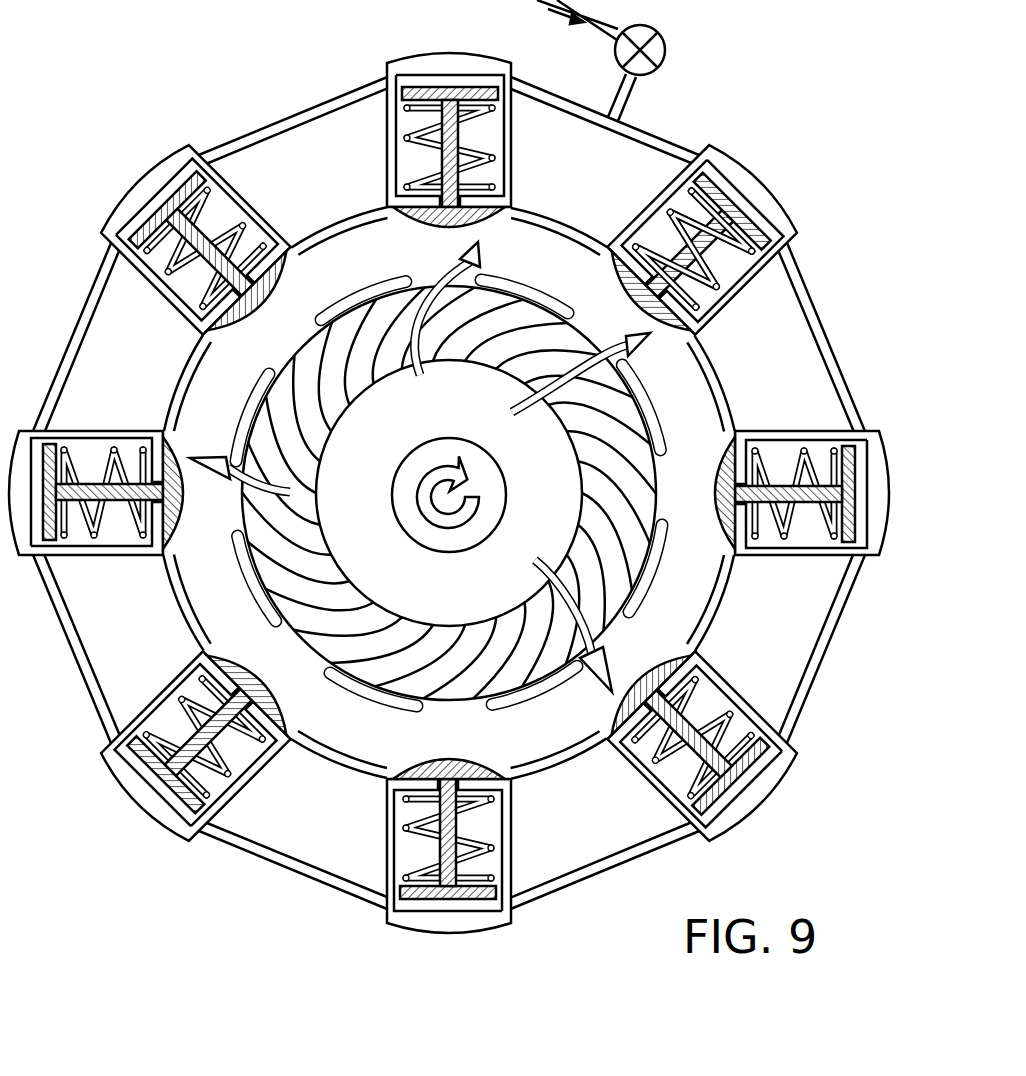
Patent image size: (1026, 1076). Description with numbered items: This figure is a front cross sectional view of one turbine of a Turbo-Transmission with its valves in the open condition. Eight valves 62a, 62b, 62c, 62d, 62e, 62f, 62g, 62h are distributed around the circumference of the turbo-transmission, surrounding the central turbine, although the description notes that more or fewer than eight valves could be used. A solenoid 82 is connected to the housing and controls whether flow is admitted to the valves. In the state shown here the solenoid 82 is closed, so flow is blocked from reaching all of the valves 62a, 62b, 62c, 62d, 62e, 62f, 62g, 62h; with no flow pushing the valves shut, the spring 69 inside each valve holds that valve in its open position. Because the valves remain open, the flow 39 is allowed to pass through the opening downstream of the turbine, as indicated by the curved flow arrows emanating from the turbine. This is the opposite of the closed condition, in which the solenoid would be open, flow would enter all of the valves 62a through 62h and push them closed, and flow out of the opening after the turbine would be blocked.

The valve 62a is at (386, 75).
The valve 62b is at (648, 201).
The valve 62c is at (840, 430).
The valve 62d is at (737, 822).
The valve 62e is at (388, 916).
The valve 62f is at (130, 783).
The valve 62g is at (140, 430).
The valve 62h is at (188, 163).
The spring 69 is at (708, 283).
The flow 39 is at (453, 272).
The solenoid 82 is at (668, 42).